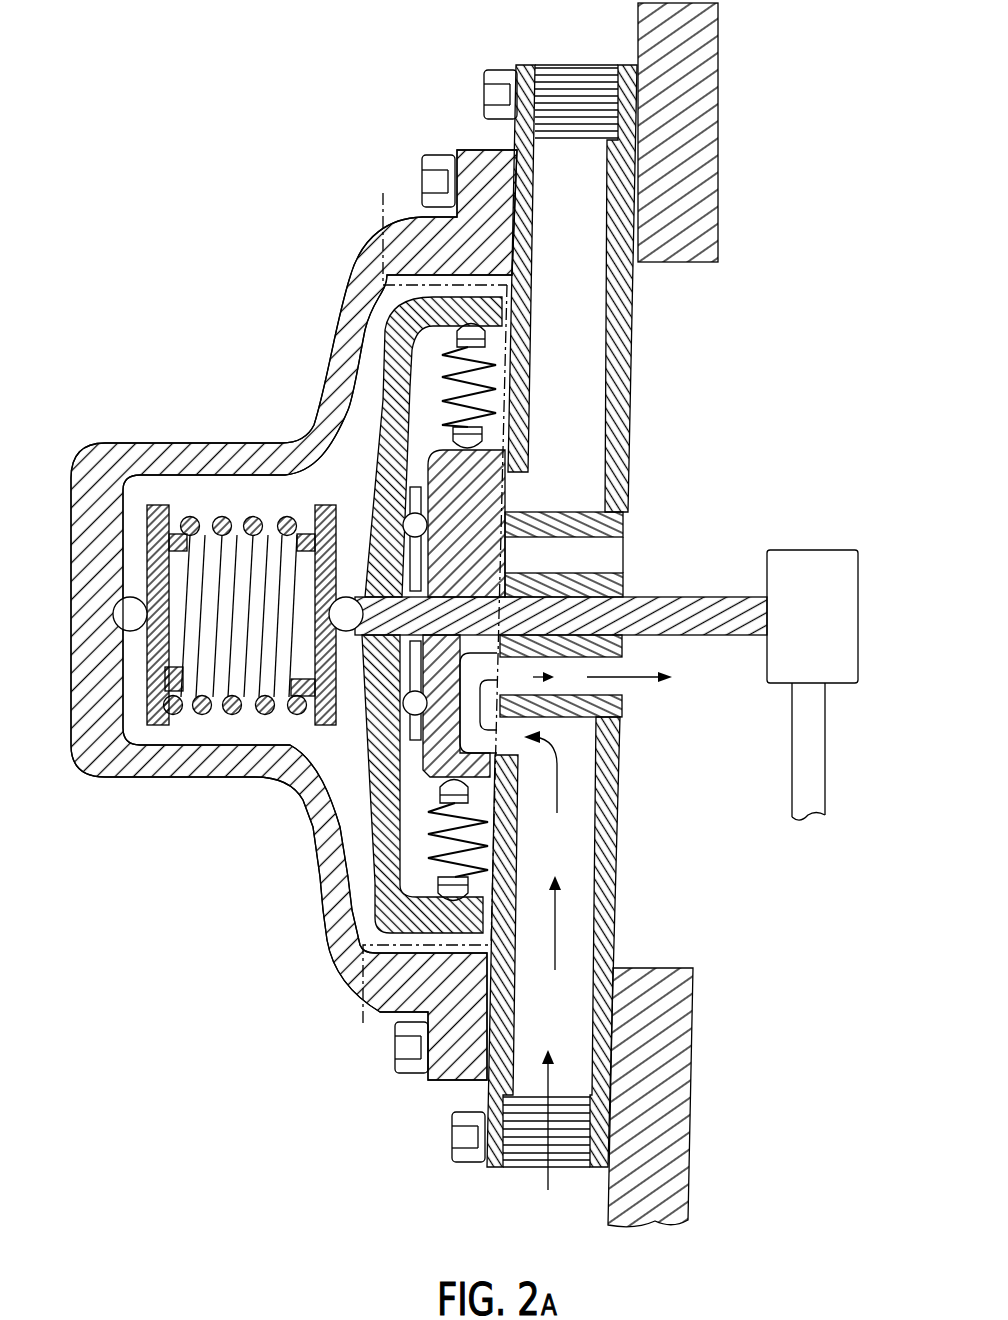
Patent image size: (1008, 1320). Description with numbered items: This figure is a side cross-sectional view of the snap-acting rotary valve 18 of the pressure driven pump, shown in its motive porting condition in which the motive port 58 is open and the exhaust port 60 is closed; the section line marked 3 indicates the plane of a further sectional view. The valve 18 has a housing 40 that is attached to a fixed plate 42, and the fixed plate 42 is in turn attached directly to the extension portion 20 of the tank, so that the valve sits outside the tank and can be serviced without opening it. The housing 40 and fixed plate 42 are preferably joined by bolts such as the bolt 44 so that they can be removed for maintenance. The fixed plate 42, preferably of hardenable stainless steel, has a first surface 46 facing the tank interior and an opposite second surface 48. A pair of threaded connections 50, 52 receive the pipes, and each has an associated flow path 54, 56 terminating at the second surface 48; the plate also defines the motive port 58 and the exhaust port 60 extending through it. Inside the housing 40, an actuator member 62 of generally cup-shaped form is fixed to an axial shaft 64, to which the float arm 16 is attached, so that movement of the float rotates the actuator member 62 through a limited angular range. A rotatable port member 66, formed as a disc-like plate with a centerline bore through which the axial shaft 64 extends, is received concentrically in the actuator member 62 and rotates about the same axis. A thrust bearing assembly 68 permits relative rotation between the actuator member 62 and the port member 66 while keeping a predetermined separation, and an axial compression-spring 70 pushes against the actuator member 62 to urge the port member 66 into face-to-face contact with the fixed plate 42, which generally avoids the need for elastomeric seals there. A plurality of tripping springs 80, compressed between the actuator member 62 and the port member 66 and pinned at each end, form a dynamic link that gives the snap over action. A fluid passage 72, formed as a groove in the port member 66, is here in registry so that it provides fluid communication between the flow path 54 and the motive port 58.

The float arm 16 is at (798, 752).
The snap-acting rotary valve 18 is at (176, 897).
The extension portion 20 is at (609, 1187).
The housing 40 is at (90, 463).
The fixed plate 42 is at (478, 1093).
The bolt 44 is at (429, 172).
The first surface 46 is at (628, 453).
The second surface 48 is at (505, 362).
The threaded connection 50 is at (533, 1143).
The threaded connection 52 is at (578, 92).
The flow path 54 is at (570, 903).
The flow path 56 is at (570, 283).
The motive port 58 is at (593, 690).
The exhaust port 60 is at (602, 557).
The actuator member 62 is at (323, 905).
The axial shaft 64 is at (690, 605).
The rotatable port member 66 is at (447, 477).
The thrust bearing assembly 68 is at (404, 706).
The axial compression-spring 70 is at (223, 673).
The fluid passage 72 is at (427, 775).
The tripping springs 80 is at (487, 393).
The section line 3 is at (372, 193).